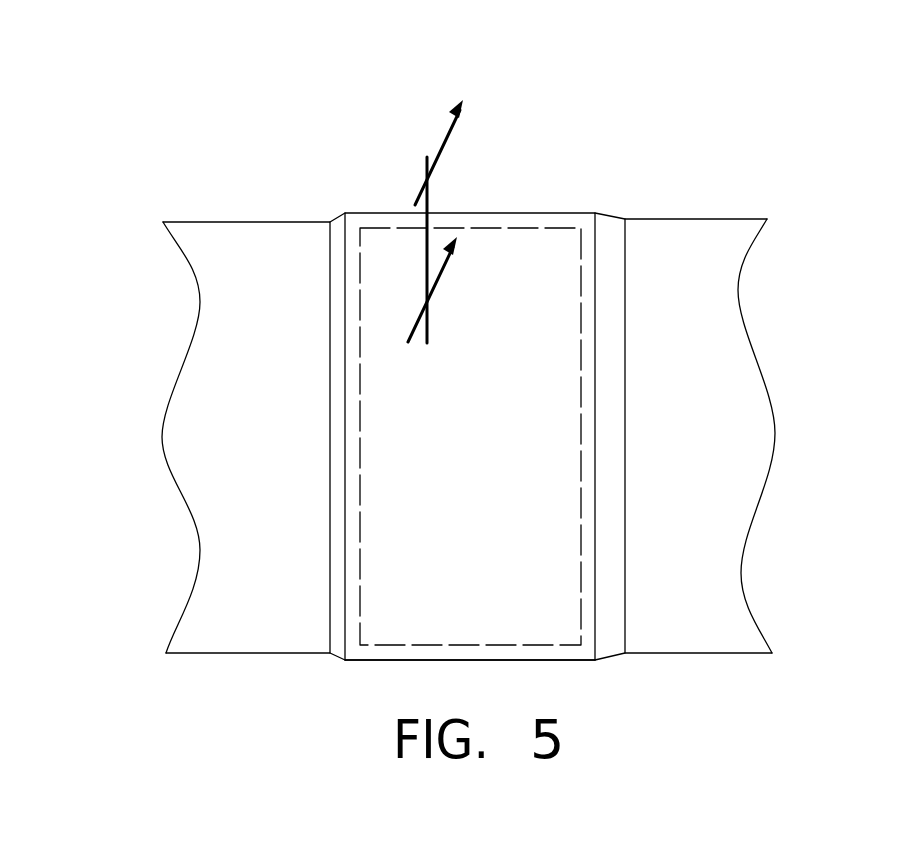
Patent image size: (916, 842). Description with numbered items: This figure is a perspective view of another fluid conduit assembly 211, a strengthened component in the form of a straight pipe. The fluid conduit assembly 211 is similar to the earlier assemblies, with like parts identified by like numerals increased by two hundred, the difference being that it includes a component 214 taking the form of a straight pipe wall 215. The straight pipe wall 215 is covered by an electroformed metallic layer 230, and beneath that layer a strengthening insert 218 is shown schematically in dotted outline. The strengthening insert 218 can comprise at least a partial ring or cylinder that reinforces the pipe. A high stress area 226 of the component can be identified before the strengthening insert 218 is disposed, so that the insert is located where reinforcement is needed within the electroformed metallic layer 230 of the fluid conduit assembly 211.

The fluid conduit assembly 211 is at (777, 116).
The component 214 is at (462, 193).
The straight pipe wall 215 is at (368, 677).
The strengthening insert 218 is at (400, 227).
The high stress area 226 is at (560, 202).
The electroformed metallic layer 230 is at (677, 397).